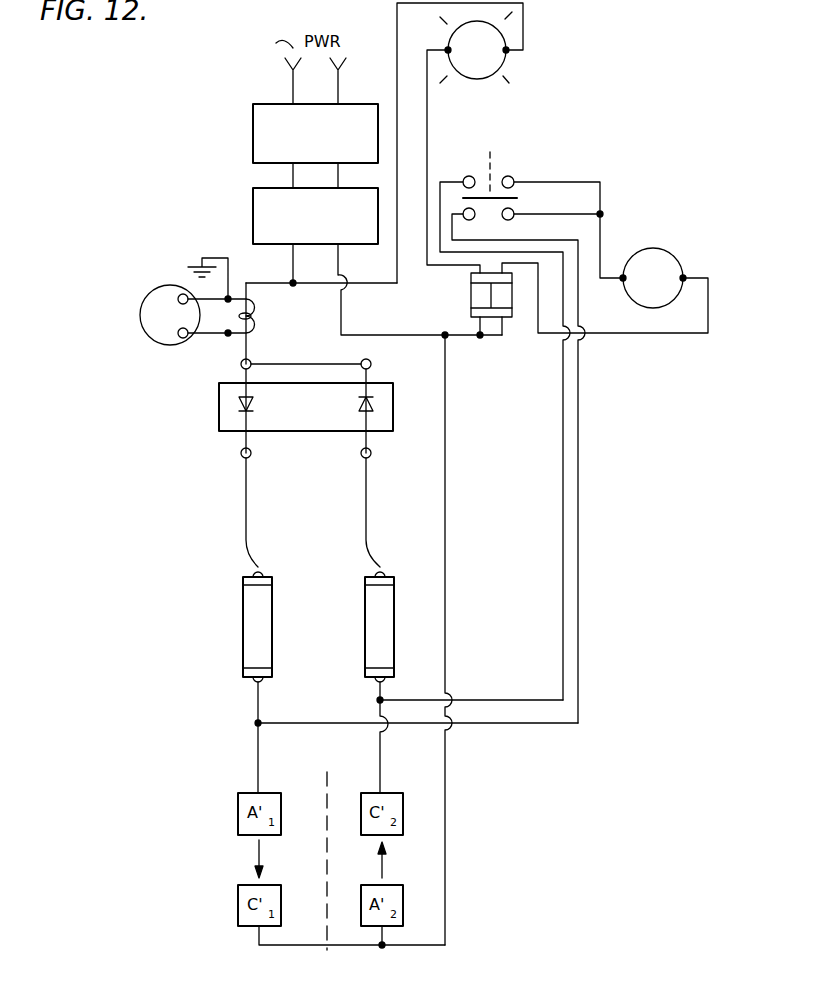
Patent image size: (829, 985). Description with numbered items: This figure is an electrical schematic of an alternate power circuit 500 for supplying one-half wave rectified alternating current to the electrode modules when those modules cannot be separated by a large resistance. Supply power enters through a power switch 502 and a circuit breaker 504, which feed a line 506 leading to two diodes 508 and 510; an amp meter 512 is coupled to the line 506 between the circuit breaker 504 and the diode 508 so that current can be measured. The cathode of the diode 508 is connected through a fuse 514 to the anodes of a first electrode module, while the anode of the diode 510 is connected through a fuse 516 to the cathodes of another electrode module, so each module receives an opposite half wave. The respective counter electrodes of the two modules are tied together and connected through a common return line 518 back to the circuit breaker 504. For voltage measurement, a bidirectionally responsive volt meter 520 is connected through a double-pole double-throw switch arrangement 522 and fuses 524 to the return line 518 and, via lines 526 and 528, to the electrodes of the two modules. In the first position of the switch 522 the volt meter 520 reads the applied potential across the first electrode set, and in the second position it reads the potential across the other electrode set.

The power circuit 500 is at (198, 84).
The power switch 502 is at (253, 128).
The circuit breaker 504 is at (253, 204).
The line 506 is at (255, 282).
The diode 508 is at (262, 397).
The diode 510 is at (358, 404).
The amp meter 512 is at (165, 346).
The fuse 514 is at (243, 622).
The fuse 516 is at (365, 622).
The common return line 518 is at (441, 470).
The volt meter 520 is at (667, 252).
The double-pole double-throw switch arrangement 522 is at (512, 153).
The fuses 524 is at (470, 297).
The line 526 is at (580, 648).
The line 528 is at (563, 622).